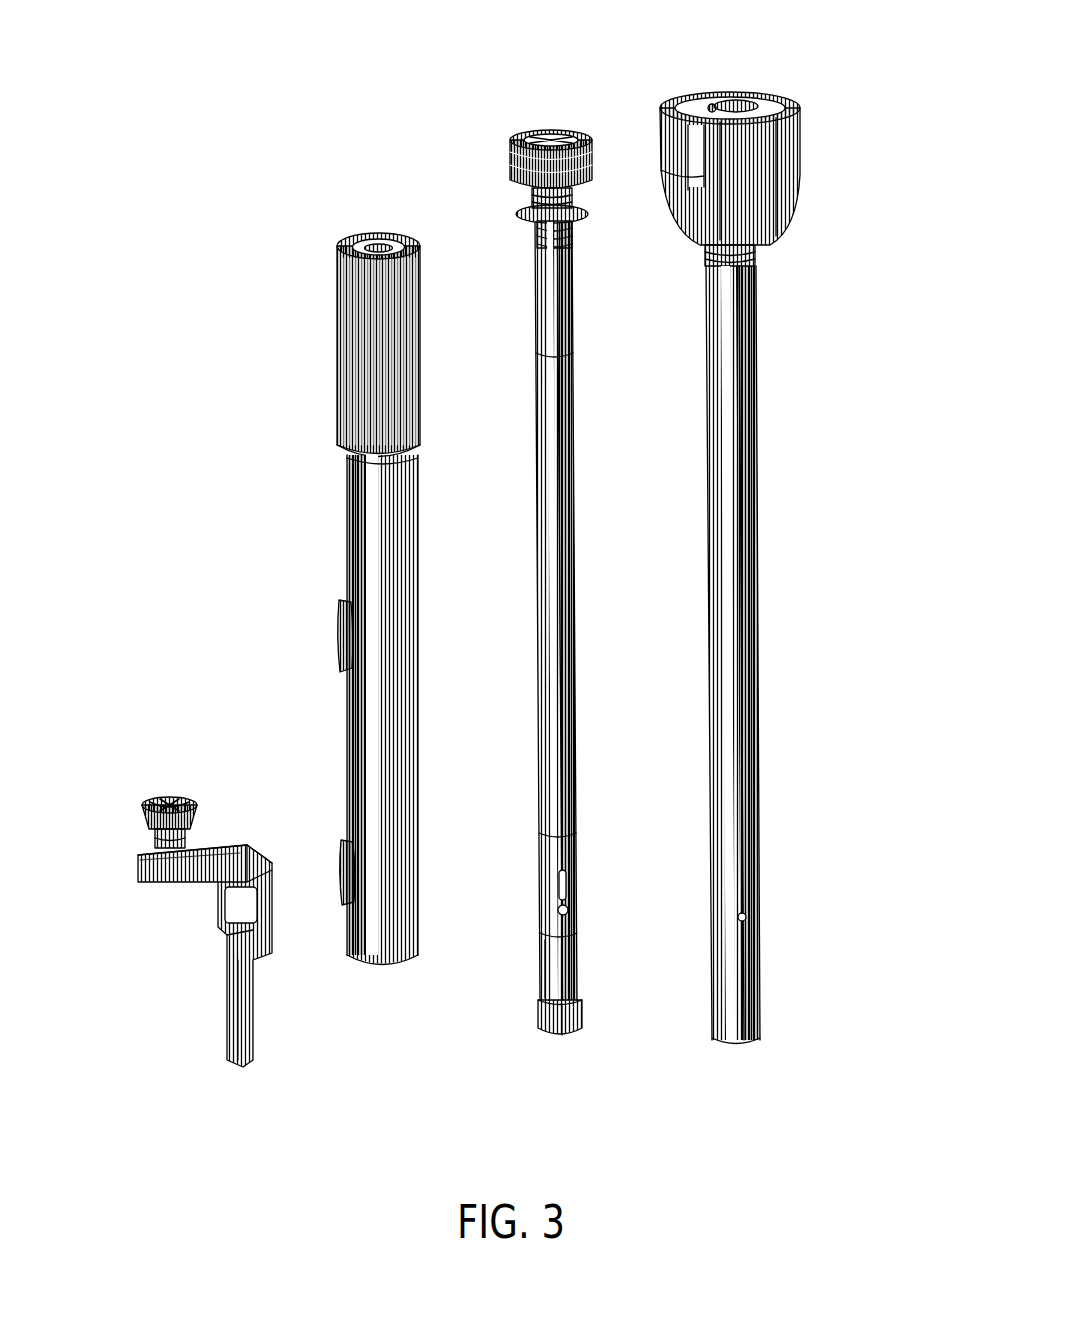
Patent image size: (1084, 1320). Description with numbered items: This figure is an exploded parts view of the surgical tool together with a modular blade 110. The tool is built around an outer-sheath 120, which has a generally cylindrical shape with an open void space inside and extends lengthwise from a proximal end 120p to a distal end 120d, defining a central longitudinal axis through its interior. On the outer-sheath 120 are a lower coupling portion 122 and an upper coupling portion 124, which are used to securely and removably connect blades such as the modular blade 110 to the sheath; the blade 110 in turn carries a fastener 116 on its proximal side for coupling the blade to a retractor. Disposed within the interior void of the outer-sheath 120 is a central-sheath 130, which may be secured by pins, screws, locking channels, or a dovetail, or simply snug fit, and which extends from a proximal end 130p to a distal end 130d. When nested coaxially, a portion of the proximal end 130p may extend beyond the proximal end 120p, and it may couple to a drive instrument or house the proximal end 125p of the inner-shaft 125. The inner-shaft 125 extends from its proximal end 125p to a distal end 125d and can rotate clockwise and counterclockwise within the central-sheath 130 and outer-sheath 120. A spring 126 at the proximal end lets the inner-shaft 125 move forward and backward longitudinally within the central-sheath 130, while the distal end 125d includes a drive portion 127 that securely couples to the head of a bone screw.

The modular blade 110 is at (193, 925).
The fastener 116 is at (143, 806).
The outer-sheath 120 is at (358, 748).
The proximal end of outer-sheath 120p is at (365, 215).
The distal end of outer-sheath 120d is at (390, 980).
The lower coupling portion 122 is at (340, 853).
The upper coupling portion 124 is at (340, 628).
The inner-shaft 125 is at (570, 600).
The proximal end of inner-shaft 125p is at (590, 115).
The distal end of inner-shaft 125d is at (597, 990).
The spring 126 is at (523, 136).
The drive portion 127 is at (578, 1036).
The central-sheath 130 is at (742, 657).
The proximal end of central-sheath 130p is at (802, 78).
The distal end of central-sheath 130d is at (828, 1023).